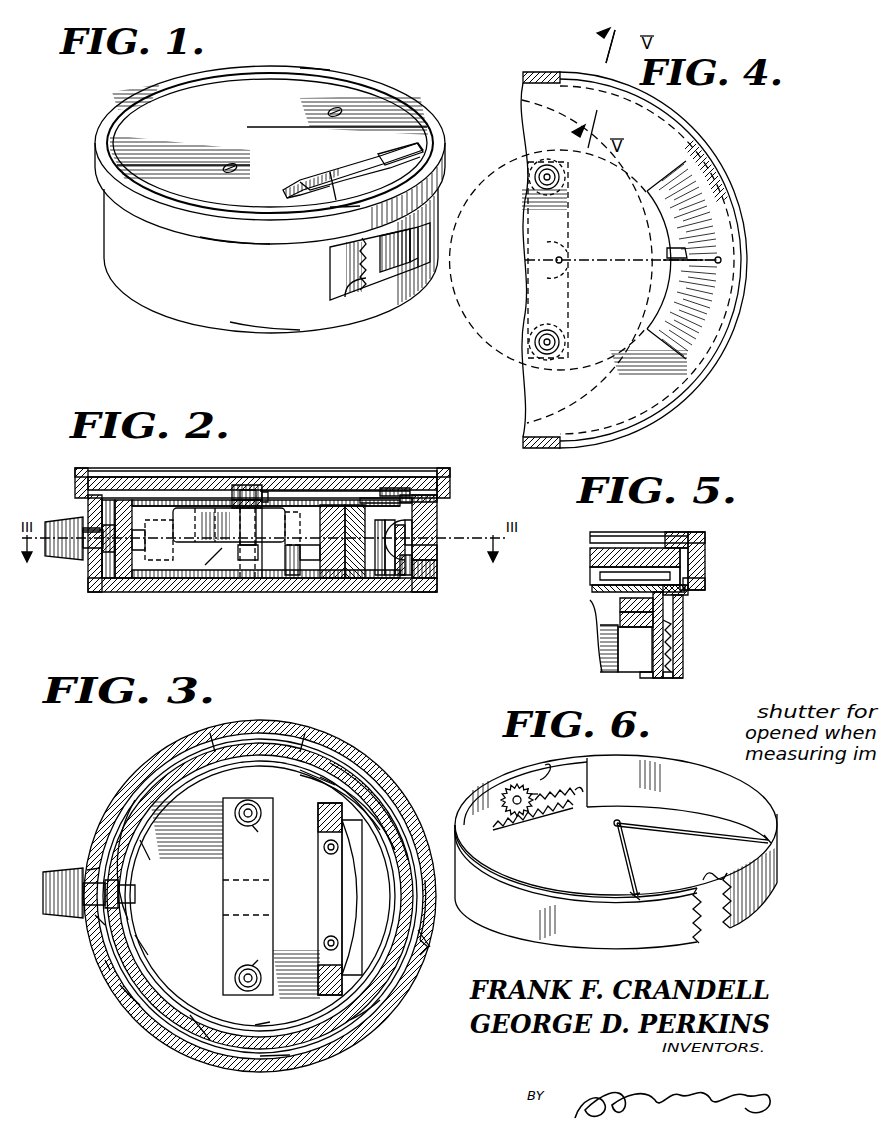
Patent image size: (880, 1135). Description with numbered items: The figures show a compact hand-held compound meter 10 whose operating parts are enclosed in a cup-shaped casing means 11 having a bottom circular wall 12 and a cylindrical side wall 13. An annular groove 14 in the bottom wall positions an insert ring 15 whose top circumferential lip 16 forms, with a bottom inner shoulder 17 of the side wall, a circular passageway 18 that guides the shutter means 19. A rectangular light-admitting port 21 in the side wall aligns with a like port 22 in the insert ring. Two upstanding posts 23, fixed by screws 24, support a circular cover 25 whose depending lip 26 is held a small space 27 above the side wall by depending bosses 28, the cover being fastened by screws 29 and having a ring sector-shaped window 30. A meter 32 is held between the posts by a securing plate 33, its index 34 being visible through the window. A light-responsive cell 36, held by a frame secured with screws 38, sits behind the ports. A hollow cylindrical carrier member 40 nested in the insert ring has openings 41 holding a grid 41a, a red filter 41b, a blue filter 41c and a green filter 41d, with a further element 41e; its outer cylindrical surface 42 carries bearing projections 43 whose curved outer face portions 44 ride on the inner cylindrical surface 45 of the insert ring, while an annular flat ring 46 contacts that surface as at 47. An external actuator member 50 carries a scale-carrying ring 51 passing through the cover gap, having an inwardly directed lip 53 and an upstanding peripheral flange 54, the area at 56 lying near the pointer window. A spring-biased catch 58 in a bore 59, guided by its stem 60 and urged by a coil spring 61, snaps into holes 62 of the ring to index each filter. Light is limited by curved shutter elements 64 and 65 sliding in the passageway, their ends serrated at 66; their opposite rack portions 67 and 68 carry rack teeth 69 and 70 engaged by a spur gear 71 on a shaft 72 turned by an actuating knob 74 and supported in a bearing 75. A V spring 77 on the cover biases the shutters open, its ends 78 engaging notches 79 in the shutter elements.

In FIG. 1, the compound meter 10 is at (343, 72).
In FIG. 4, the compound meter 10 is at (732, 176).
In FIG. 2, the compound meter 10 is at (308, 452).
In FIG. 5, the compound meter 10 is at (713, 542).
In FIG. 3, the compound meter 10 is at (367, 752).
In FIG. 1, the casing means 11 is at (148, 302).
In FIG. 2, the casing means 11 is at (90, 598).
In FIG. 3, the casing means 11 is at (118, 995).
In FIG. 2, the bottom circular wall 12 is at (267, 595).
In FIG. 3, the bottom circular wall 12 is at (225, 882).
In FIG. 1, the side wall 13 is at (278, 325).
In FIG. 2, the side wall 13 is at (80, 500).
In FIG. 5, the side wall 13 is at (680, 662).
In FIG. 3, the side wall 13 is at (143, 762).
In FIG. 2, the annular groove 14 is at (417, 585).
In FIG. 1, the insert ring 15 is at (342, 288).
In FIG. 5, the insert ring 15 is at (620, 610).
In FIG. 3, the insert ring 15 is at (117, 973).
In FIG. 2, the top circumferential lip 16 is at (433, 528).
In FIG. 5, the top circumferential lip 16 is at (623, 620).
In FIG. 3, the top circumferential lip 16 is at (85, 913).
In FIG. 2, the bottom inner shoulder 17 is at (408, 582).
In FIG. 2, the circular passageway 18 is at (423, 555).
In FIG. 5, the circular passageway 18 is at (635, 649).
In FIG. 3, the circular passageway 18 is at (197, 1042).
In FIG. 1, the shutter means 19 is at (393, 247).
In FIG. 2, the shutter means 19 is at (393, 582).
In FIG. 3, the shutter means 19 is at (447, 903).
In FIG. 6, the shutter means 19 is at (678, 764).
In FIG. 1, the light-admitting port 21 is at (415, 255).
In FIG. 2, the light-admitting port 21 is at (435, 537).
In FIG. 3, the light-admitting port 21 is at (430, 947).
In FIG. 1, the light-admitting port 22 is at (368, 280).
In FIG. 2, the light-admitting port 22 is at (415, 588).
In FIG. 2, the posts 23 is at (223, 555).
In FIG. 3, the posts 23 is at (245, 822).
In FIG. 2, the screws 24 is at (248, 592).
In FIG. 3, the screws 24 is at (263, 827).
In FIG. 1, the cover 25 is at (358, 100).
In FIG. 4, the cover 25 is at (583, 263).
In FIG. 2, the cover 25 is at (300, 480).
In FIG. 5, the cover 25 is at (592, 558).
In FIG. 2, the depending circumferential lip 26 is at (100, 477).
In FIG. 5, the depending circumferential lip 26 is at (705, 558).
In FIG. 2, the space 27 is at (448, 495).
In FIG. 5, the space 27 is at (690, 588).
In FIG. 4, the bosses 28 is at (547, 195).
In FIG. 2, the bosses 28 is at (245, 485).
In FIG. 1, the screws 29 is at (327, 110).
In FIG. 4, the screws 29 is at (555, 180).
In FIG. 2, the screws 29 is at (267, 478).
In FIG. 1, the window 30 is at (417, 157).
In FIG. 2, the window 30 is at (388, 478).
In FIG. 2, the meter 32 is at (217, 552).
In FIG. 4, the securing plate 33 is at (568, 237).
In FIG. 2, the securing plate 33 is at (233, 485).
In FIG. 3, the securing plate 33 is at (223, 915).
In FIG. 1, the index 34 is at (368, 167).
In FIG. 4, the index 34 is at (668, 256).
In FIG. 2, the index 34 is at (355, 478).
In FIG. 2, the light-responsive cell 36 is at (358, 582).
In FIG. 3, the light-responsive cell 36 is at (343, 915).
In FIG. 2, the screws 38 is at (293, 580).
In FIG. 3, the screws 38 is at (327, 850).
In FIG. 2, the carrier member 40 is at (205, 565).
In FIG. 5, the carrier member 40 is at (610, 655).
In FIG. 3, the carrier member 40 is at (323, 790).
In FIG. 2, the openings 41 is at (138, 562).
In FIG. 5, the openings 41 is at (602, 630).
In FIG. 3, the openings 41 is at (173, 780).
In FIG. 2, the grid 41a is at (345, 568).
In FIG. 3, the red filter 41b is at (260, 1030).
In FIG. 3, the blue filter 41c is at (138, 947).
In FIG. 3, the green filter 41d is at (143, 850).
In FIG. 3, the spring arm portion 41e is at (330, 777).
In FIG. 2, the outer cylindrical surface 42 is at (122, 480).
In FIG. 3, the outer cylindrical surface 42 is at (317, 735).
In FIG. 2, the bearing projections 43 is at (135, 533).
In FIG. 3, the bearing projections 43 is at (210, 730).
In FIG. 2, the curved outer face portions 44 is at (92, 568).
In FIG. 3, the curved outer face portions 44 is at (377, 787).
In FIG. 2, the inner cylindrical surface 45 is at (140, 482).
In FIG. 3, the inner cylindrical surface 45 is at (367, 777).
In FIG. 2, the annular flat ring 46 is at (115, 592).
In FIG. 3, the annular flat ring 46 is at (145, 1010).
In FIG. 2, the contact 47 is at (103, 588).
In FIG. 3, the contact 47 is at (273, 1057).
In FIG. 1, the actuator member 50 is at (238, 240).
In FIG. 2, the actuator member 50 is at (450, 478).
In FIG. 5, the actuator member 50 is at (702, 535).
In FIG. 1, the scale-carrying ring 51 is at (310, 190).
In FIG. 2, the scale-carrying ring 51 is at (418, 480).
In FIG. 5, the scale-carrying ring 51 is at (613, 595).
In FIG. 2, the lip 53 is at (440, 475).
In FIG. 5, the lip 53 is at (677, 532).
In FIG. 2, the upstanding peripheral flange 54 is at (450, 502).
In FIG. 5, the upstanding peripheral flange 54 is at (703, 583).
In FIG. 1, the pointer window 56 is at (340, 208).
In FIG. 1, the catch 58 is at (317, 72).
In FIG. 5, the catch 58 is at (677, 613).
In FIG. 5, the bore 59 is at (677, 633).
In FIG. 5, the stem 60 is at (680, 647).
In FIG. 5, the coil spring 61 is at (683, 677).
In FIG. 4, the holes 62 is at (726, 257).
In FIG. 5, the holes 62 is at (697, 577).
In FIG. 1, the shutter element 64 is at (430, 266).
In FIG. 2, the shutter element 64 is at (423, 565).
In FIG. 5, the shutter element 64 is at (645, 673).
In FIG. 3, the shutter element 64 is at (400, 827).
In FIG. 6, the shutter element 64 is at (730, 788).
In FIG. 3, the shutter element 65 is at (373, 1033).
In FIG. 6, the shutter element 65 is at (548, 890).
In FIG. 1, the serrated ends 66 is at (360, 257).
In FIG. 2, the serrated ends 66 is at (423, 580).
In FIG. 3, the serrated ends 66 is at (428, 947).
In FIG. 6, the serrated ends 66 is at (713, 876).
In FIG. 3, the rack portion 67 is at (128, 917).
In FIG. 6, the rack portion 67 is at (513, 823).
In FIG. 6, the rack portion 68 is at (535, 775).
In FIG. 3, the rack teeth 69 is at (120, 830).
In FIG. 6, the rack teeth 69 is at (570, 805).
In FIG. 6, the rack teeth 70 is at (548, 768).
In FIG. 2, the spur gear 71 is at (97, 575).
In FIG. 3, the spur gear 71 is at (128, 895).
In FIG. 6, the spur gear 71 is at (540, 792).
In FIG. 2, the shaft 72 is at (65, 563).
In FIG. 3, the shaft 72 is at (73, 873).
In FIG. 6, the shaft 72 is at (508, 810).
In FIG. 2, the actuating knob 74 is at (67, 523).
In FIG. 3, the bearing 75 is at (130, 878).
In FIG. 6, the V spring 77 is at (647, 830).
In FIG. 6, the ends 78 is at (773, 838).
In FIG. 3, the notches 79 is at (95, 923).
In FIG. 6, the notches 79 is at (637, 902).